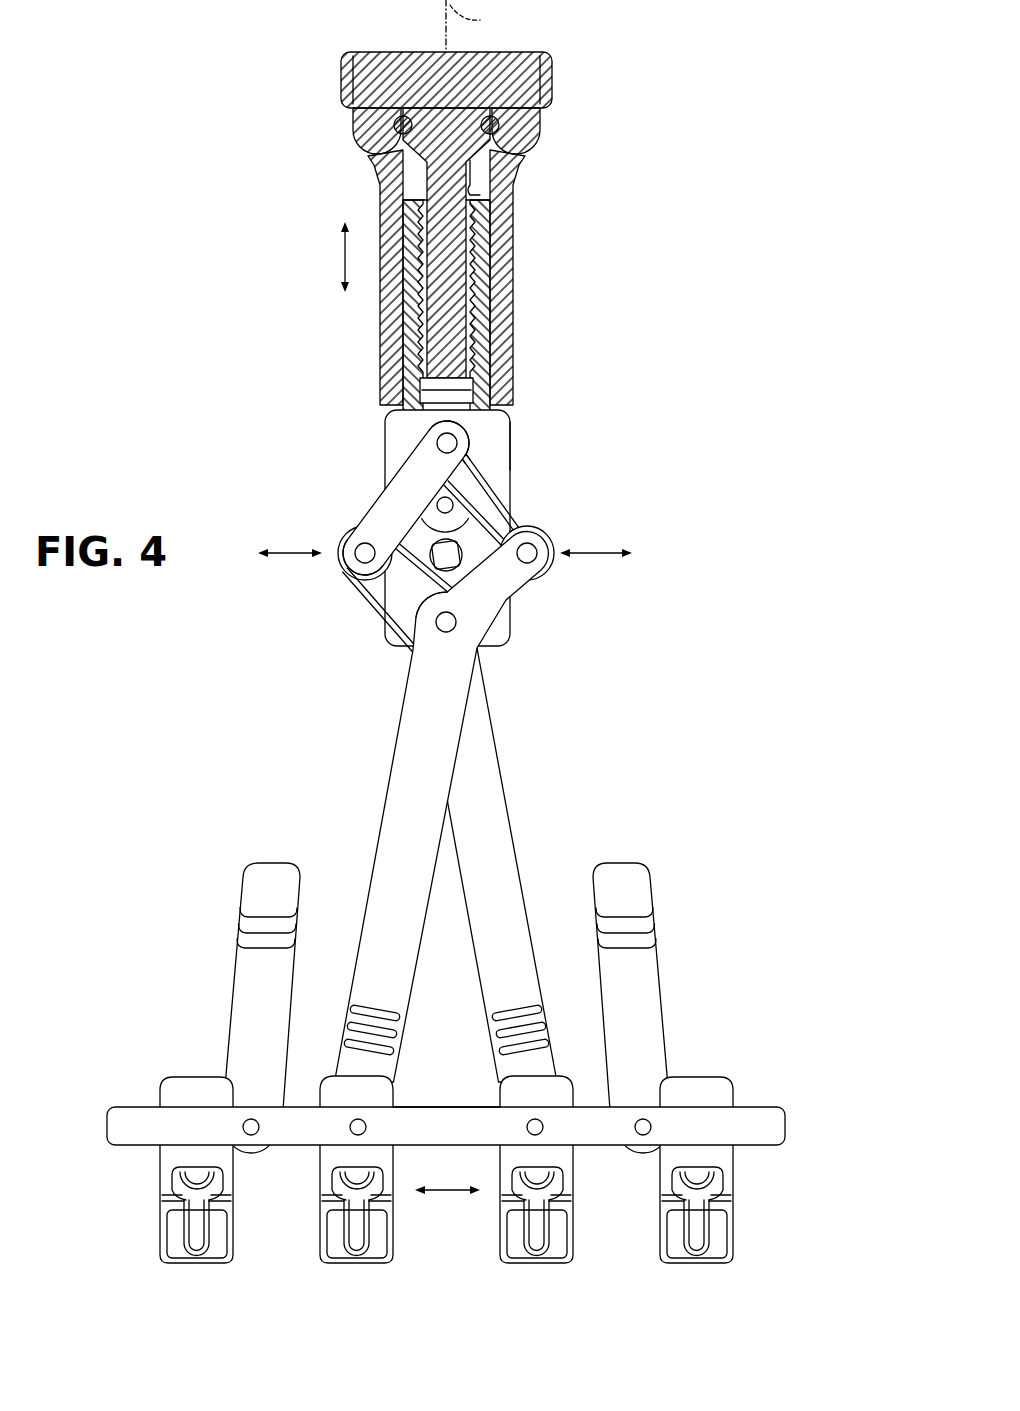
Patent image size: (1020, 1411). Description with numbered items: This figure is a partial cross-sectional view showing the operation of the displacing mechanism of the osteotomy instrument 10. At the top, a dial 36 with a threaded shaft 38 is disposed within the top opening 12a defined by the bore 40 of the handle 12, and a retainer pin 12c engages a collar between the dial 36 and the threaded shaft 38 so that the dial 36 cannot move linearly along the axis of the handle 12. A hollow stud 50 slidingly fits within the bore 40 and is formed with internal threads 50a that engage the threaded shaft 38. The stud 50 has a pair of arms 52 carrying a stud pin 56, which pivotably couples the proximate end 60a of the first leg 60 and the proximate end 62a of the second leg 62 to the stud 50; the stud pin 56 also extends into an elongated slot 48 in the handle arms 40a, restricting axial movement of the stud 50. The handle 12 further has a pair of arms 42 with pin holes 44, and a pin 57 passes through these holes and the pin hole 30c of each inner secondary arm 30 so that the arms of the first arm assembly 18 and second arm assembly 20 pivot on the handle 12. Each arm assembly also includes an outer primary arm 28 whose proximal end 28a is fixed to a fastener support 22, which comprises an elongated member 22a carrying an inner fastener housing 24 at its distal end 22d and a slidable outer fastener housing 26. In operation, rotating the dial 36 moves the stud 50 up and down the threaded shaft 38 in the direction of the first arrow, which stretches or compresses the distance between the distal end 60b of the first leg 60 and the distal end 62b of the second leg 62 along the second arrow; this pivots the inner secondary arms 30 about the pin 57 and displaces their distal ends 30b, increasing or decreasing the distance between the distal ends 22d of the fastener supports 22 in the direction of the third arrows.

The osteotomy instrument 10 is at (700, 198).
The handle 12 is at (515, 222).
The top opening 12a is at (362, 124).
The retainer pin 12c is at (524, 112).
The first arm assembly 18 is at (700, 755).
The second arm assembly 20 is at (268, 749).
The fastener support 22 is at (168, 1056).
The elongated member 22a is at (748, 1084).
The distal end of fastener support 22d is at (492, 1116).
The inner fastener housing 24 is at (316, 1063).
The outer fastener housing 26 is at (150, 1078).
The outer primary arm 28 is at (238, 947).
The proximal end of outer primary arm 28a is at (257, 1155).
The inner secondary arm 30 is at (390, 796).
The distal end of inner secondary arm 30b is at (548, 547).
The pin hole of inner secondary arm 30c is at (482, 640).
The dial 36 is at (528, 52).
The threaded shaft 38 is at (496, 126).
The bore 40 is at (488, 175).
The pair of arms of handle 40a is at (502, 450).
The pair of arms 42 is at (392, 455).
The pin hole 44 is at (462, 557).
The elongated slot 48 is at (437, 500).
The hollow stud 50 is at (492, 262).
The internal threads 50a is at (482, 300).
The pair of arms of stud 52 is at (412, 398).
The stud pin 56 is at (457, 441).
The pin 57 is at (415, 640).
The first leg 60 is at (387, 503).
The proximate end of first leg 60a is at (420, 425).
The distal end of first leg 60b is at (362, 578).
The second leg 62 is at (512, 508).
The proximate end of second leg 62a is at (465, 432).
The distal end of second leg 62b is at (556, 553).